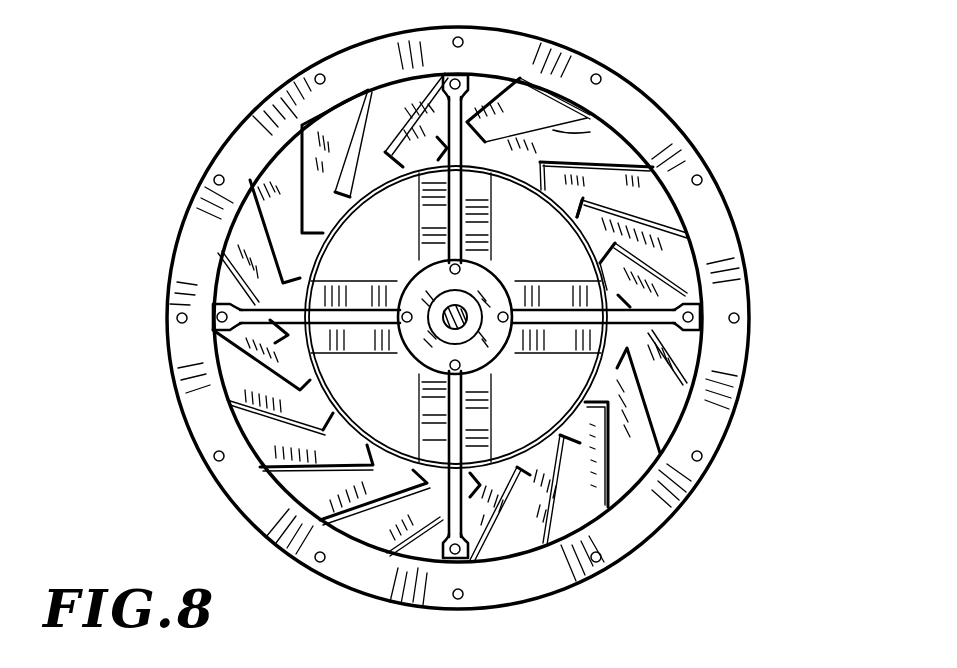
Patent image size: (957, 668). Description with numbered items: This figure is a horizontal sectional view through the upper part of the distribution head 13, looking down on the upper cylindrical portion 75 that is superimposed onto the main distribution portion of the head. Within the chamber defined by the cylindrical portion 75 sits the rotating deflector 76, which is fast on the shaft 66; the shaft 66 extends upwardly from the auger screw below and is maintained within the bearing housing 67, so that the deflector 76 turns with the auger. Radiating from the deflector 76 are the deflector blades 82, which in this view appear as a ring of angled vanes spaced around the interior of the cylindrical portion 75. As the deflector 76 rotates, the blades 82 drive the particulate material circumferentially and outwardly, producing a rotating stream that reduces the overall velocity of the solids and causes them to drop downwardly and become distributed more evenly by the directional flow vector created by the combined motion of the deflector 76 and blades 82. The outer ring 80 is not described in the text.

The distribution head 13 is at (747, 127).
The shaft 66 is at (460, 313).
The bearing housing 67 is at (440, 324).
The upper cylindrical portion 75 is at (683, 257).
The rotating deflector 76 is at (432, 241).
The outer rim ring 80 is at (702, 288).
The deflector blades 82 is at (590, 195).